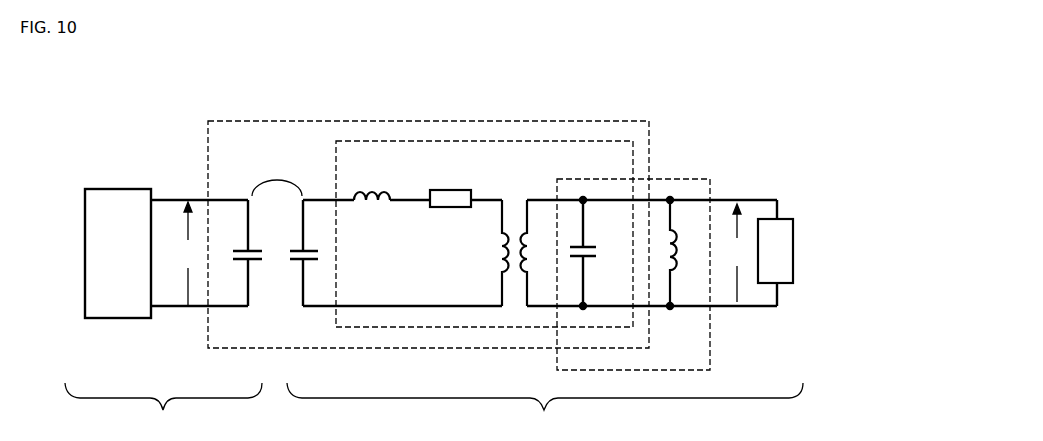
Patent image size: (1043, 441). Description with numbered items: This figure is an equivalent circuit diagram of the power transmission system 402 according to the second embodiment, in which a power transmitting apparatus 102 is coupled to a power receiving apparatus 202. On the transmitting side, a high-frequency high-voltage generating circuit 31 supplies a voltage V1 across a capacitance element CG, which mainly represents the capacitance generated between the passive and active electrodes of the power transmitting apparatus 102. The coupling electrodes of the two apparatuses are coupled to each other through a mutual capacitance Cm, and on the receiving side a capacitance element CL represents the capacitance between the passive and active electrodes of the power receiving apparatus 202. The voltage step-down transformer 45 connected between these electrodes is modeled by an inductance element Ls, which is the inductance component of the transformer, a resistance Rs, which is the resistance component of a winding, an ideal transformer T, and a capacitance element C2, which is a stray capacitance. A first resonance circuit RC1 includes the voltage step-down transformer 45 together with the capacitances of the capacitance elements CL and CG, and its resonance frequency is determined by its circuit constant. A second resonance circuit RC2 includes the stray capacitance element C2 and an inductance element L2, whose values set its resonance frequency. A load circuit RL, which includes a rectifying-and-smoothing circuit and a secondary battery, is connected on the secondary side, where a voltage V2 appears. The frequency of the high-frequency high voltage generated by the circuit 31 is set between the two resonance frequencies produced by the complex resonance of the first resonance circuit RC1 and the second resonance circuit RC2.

The power transmission system 402 is at (722, 53).
The high-frequency high-voltage generating circuit 31 is at (118, 189).
The power transmitting apparatus 102 is at (163, 412).
The power receiving apparatus 202 is at (545, 412).
The voltage step-down transformer 45 is at (470, 140).
The first resonance circuit RC1 is at (292, 121).
The second resonance circuit RC2 is at (711, 178).
The mutual capacitance Cm is at (277, 177).
The capacitance element CG is at (240, 253).
The capacitance element CL is at (298, 253).
The inductance element Ls is at (372, 183).
The resistance Rs is at (450, 186).
The ideal transformer T is at (513, 205).
The capacitance element C2 is at (598, 253).
The inductance element L2 is at (684, 253).
The voltage V1 is at (188, 253).
The voltage V2 is at (737, 253).
The load circuit RL is at (793, 219).